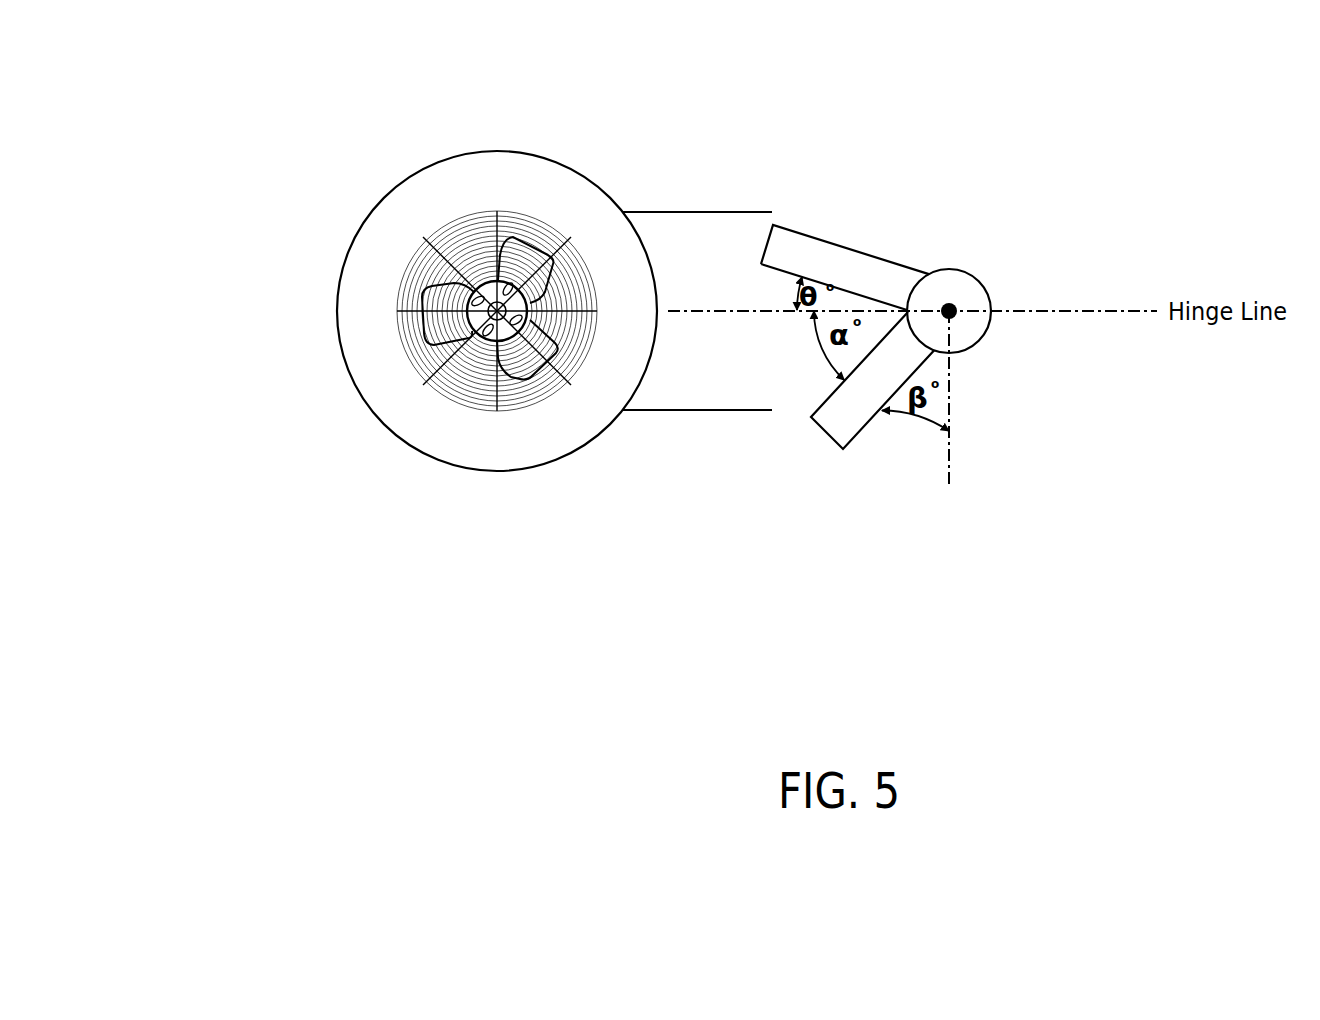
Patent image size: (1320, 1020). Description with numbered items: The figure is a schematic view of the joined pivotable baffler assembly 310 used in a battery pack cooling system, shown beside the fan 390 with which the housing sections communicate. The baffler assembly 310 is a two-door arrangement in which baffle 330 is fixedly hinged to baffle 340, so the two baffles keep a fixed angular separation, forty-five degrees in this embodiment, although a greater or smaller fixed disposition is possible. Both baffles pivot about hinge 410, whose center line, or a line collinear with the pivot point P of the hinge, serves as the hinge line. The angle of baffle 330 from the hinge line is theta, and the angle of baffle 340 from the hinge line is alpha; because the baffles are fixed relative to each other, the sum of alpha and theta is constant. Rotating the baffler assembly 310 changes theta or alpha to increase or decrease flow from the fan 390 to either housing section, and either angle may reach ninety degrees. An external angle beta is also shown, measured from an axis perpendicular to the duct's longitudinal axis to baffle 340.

The fan 390 is at (465, 237).
The joined pivotable baffler assembly 310 is at (977, 232).
The baffle 330 is at (847, 258).
The baffle 340 is at (847, 418).
The hinge 410 is at (973, 343).
The pivot point P is at (958, 305).